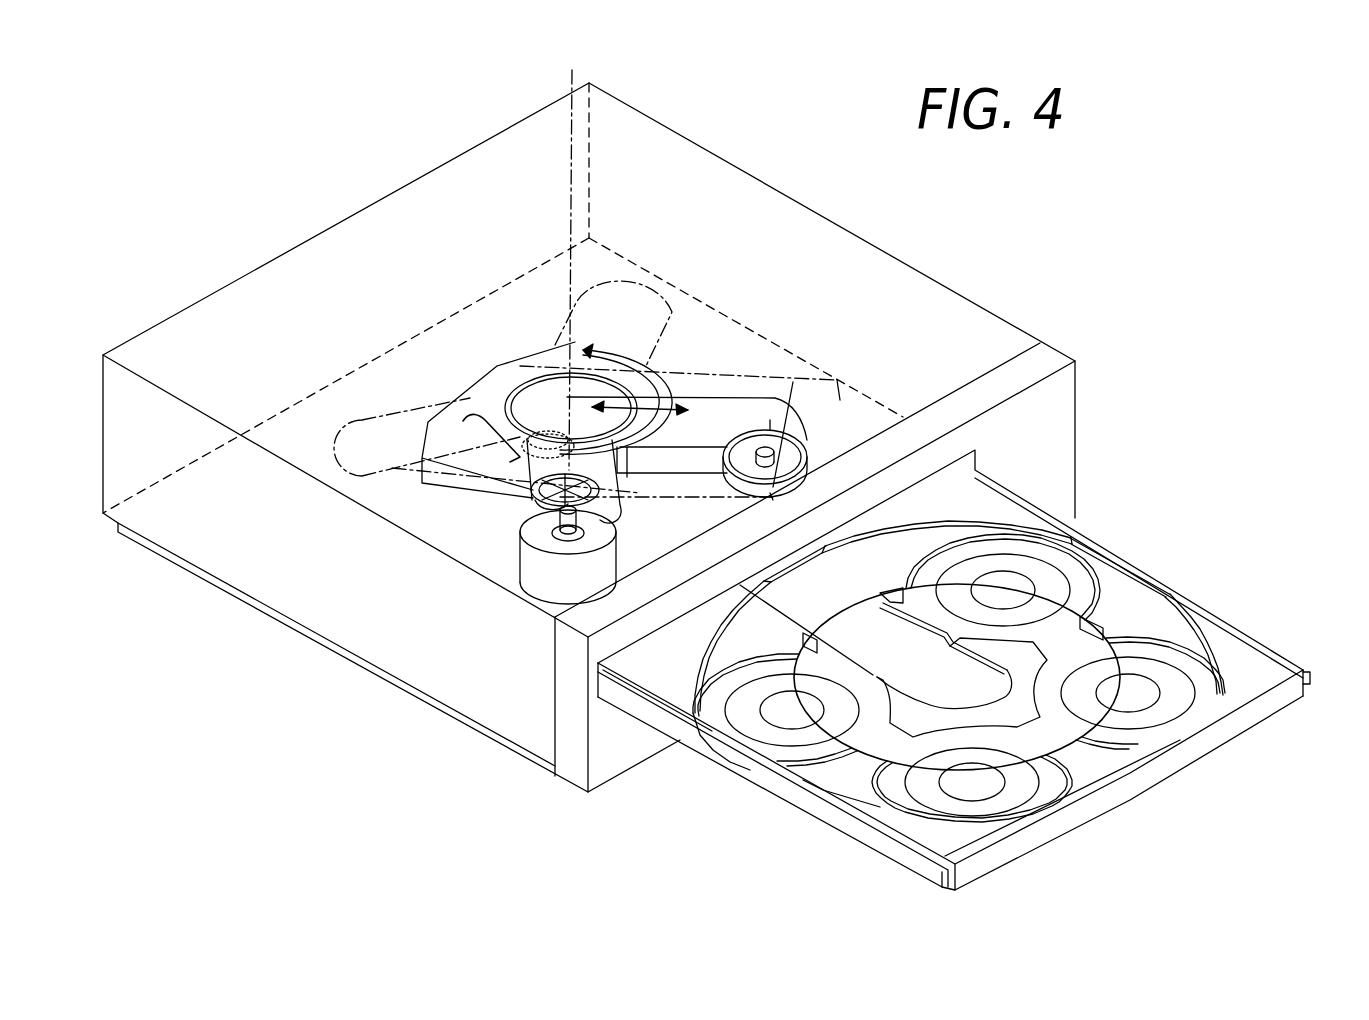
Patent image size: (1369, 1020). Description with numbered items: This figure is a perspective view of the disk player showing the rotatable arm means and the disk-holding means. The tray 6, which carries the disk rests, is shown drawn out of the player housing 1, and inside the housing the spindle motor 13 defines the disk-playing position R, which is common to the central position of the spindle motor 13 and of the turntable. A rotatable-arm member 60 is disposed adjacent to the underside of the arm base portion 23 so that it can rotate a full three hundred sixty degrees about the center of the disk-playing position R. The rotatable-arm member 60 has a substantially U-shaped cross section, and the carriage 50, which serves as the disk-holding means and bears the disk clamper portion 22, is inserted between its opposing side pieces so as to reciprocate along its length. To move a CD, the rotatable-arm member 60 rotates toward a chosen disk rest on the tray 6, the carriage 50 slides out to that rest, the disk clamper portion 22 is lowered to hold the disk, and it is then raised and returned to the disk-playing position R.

The player housing 1 is at (327, 634).
The tray 6 is at (739, 754).
The spindle motor 13 is at (538, 582).
The disk clamper portion 22 is at (545, 430).
The arm base portion 23 is at (437, 415).
The carriage 50 is at (818, 447).
The rotatable-arm member 60 is at (790, 445).
The disk-playing position R is at (571, 186).